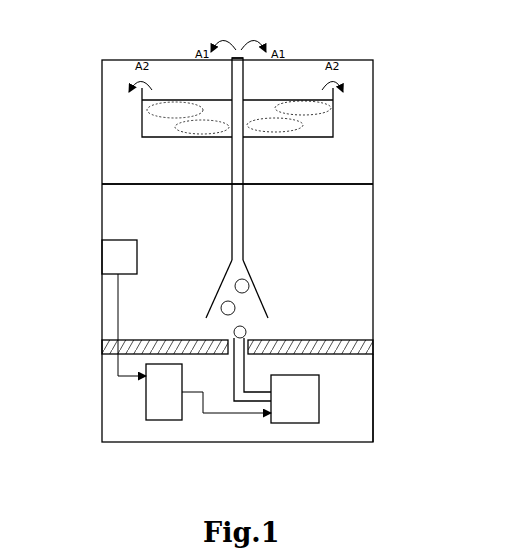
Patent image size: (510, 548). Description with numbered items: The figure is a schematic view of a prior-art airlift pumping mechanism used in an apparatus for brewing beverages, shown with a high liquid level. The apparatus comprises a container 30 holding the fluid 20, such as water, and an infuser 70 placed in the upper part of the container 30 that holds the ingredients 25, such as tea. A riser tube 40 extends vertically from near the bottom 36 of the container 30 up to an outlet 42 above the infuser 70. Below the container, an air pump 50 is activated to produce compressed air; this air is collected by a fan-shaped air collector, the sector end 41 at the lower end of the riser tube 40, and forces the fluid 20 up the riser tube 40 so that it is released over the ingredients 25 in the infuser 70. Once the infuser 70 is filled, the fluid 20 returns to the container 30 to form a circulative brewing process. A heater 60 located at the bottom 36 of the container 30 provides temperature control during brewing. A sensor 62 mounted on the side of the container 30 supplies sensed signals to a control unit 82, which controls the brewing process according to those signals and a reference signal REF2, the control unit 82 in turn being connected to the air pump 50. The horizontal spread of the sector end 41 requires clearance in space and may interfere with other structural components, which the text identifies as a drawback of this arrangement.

The fluid 20 is at (358, 231).
The ingredients 25 is at (311, 110).
The container 30 is at (373, 112).
The bottom 36 is at (373, 397).
The riser tube 40 is at (237, 218).
The sector end 41 is at (262, 304).
The tube outlet 42 is at (237, 58).
The air pump 50 is at (295, 427).
The heater 60 is at (102, 347).
The sensor 62 is at (118, 258).
The infuser 70 is at (142, 132).
The control unit 82 is at (165, 427).
The reference signal REF2 is at (146, 409).